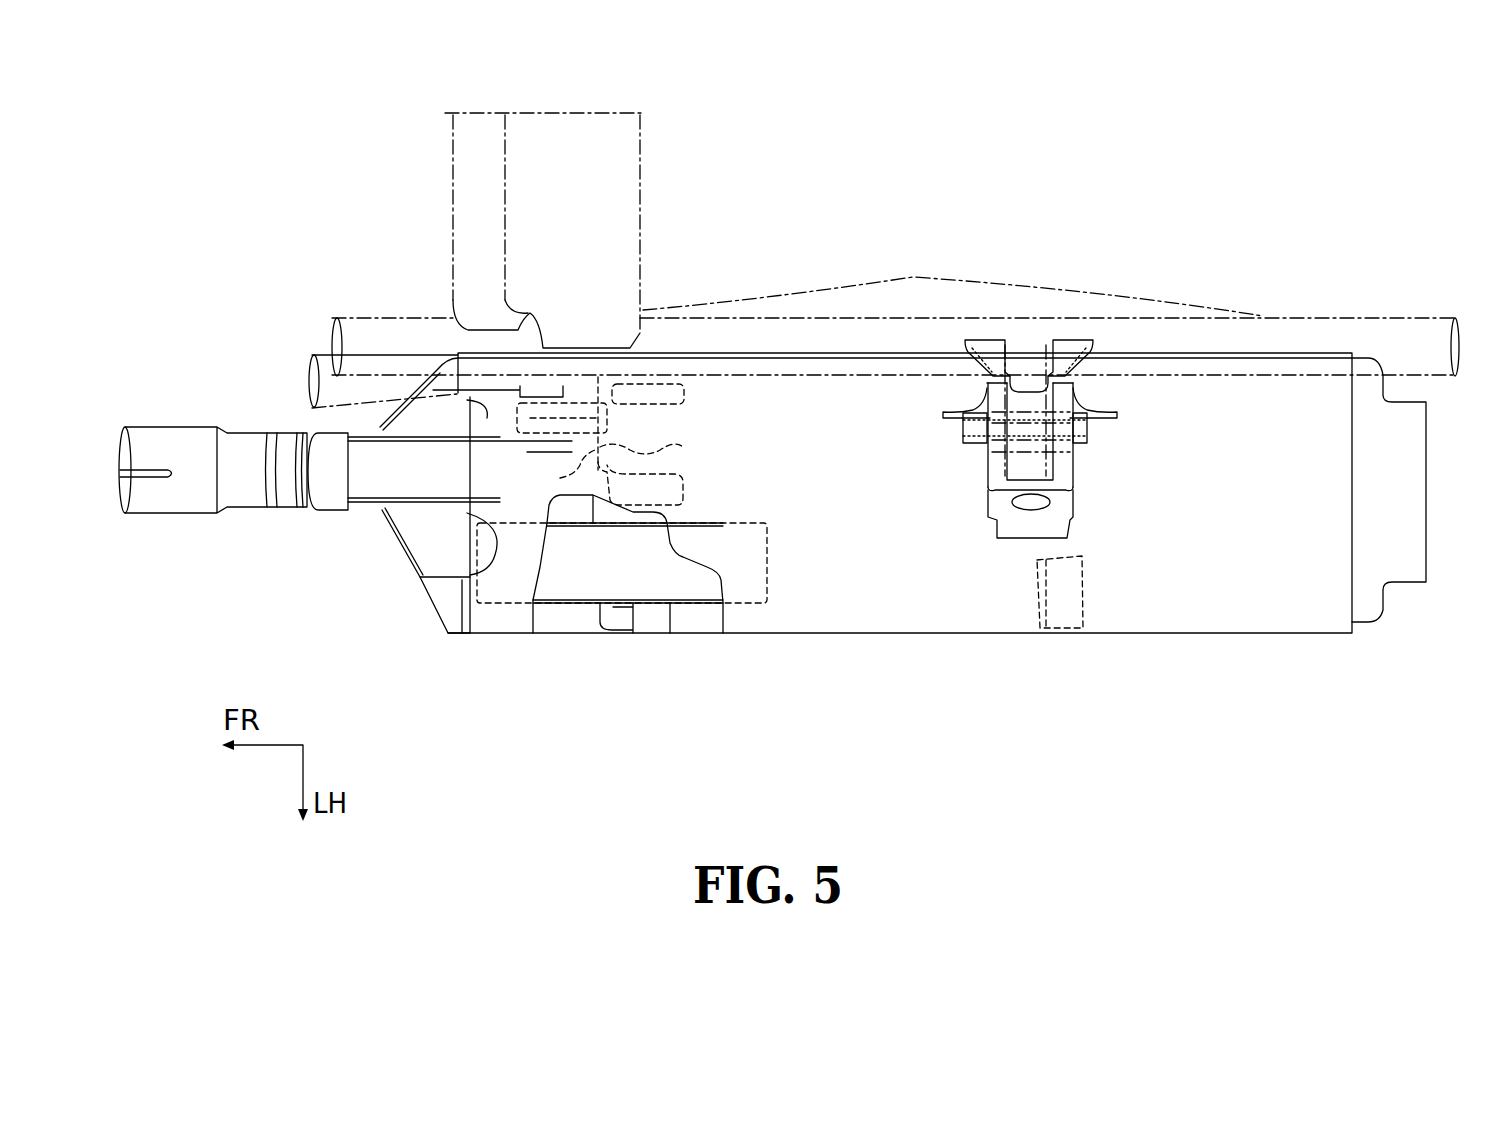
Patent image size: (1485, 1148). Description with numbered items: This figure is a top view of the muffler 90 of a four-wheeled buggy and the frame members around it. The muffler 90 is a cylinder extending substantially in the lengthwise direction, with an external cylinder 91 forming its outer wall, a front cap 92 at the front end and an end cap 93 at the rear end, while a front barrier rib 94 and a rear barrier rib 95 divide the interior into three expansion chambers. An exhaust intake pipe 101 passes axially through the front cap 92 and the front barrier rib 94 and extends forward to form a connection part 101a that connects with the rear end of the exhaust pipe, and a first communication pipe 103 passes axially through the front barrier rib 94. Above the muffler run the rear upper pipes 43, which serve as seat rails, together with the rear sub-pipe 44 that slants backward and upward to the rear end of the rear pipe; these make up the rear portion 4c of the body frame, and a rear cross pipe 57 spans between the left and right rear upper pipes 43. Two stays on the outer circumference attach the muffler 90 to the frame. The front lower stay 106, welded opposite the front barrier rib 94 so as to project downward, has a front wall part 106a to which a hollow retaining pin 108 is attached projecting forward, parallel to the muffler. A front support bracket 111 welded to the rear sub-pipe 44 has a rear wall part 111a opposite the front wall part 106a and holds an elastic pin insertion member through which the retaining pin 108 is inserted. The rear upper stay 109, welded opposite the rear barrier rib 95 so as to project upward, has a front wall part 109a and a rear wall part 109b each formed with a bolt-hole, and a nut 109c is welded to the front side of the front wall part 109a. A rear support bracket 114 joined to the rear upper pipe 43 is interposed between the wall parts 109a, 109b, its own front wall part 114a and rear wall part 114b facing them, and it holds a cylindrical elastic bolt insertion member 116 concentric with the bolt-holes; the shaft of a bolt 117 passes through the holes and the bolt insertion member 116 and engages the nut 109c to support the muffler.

The rear upper pipe 43 is at (1200, 326).
The rear portion of the body frame 4c is at (1326, 314).
The rear sub-pipe 44 is at (893, 280).
The rear cross pipe 57 is at (463, 197).
The retaining pin 108 is at (530, 343).
The muffler 90 is at (965, 669).
The external cylinder 91 is at (860, 634).
The front cap 92 is at (422, 600).
The end cap 93 is at (1383, 600).
The front barrier rib 94 is at (590, 610).
The rear barrier rib 95 is at (1040, 630).
The exhaust intake pipe 101 is at (327, 500).
The connection part 101a is at (178, 432).
The first communication pipe 103 is at (563, 402).
The front lower stay 106 is at (663, 379).
The front wall part 106a is at (625, 447).
The front support bracket 111 is at (590, 373).
The rear wall part 111a is at (550, 473).
The rear support bracket 114 is at (1092, 340).
The front wall part 114a is at (1020, 377).
The rear wall part 114b is at (1038, 365).
The bolt insertion member 116 is at (1028, 410).
The bolt 117 is at (1087, 430).
The rear upper stay 109 is at (1082, 498).
The front wall part 109a is at (987, 498).
The rear wall part 109b is at (1080, 463).
The nut 109c is at (977, 453).